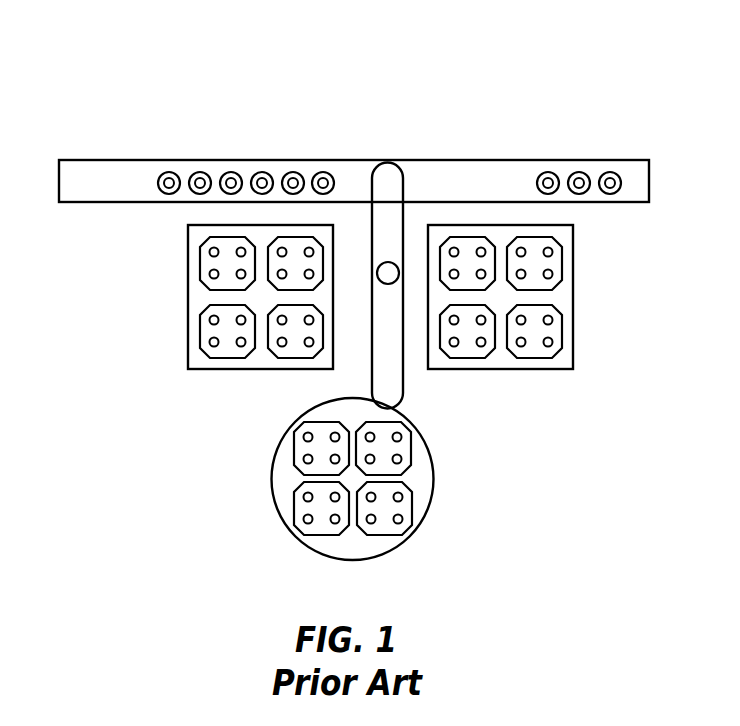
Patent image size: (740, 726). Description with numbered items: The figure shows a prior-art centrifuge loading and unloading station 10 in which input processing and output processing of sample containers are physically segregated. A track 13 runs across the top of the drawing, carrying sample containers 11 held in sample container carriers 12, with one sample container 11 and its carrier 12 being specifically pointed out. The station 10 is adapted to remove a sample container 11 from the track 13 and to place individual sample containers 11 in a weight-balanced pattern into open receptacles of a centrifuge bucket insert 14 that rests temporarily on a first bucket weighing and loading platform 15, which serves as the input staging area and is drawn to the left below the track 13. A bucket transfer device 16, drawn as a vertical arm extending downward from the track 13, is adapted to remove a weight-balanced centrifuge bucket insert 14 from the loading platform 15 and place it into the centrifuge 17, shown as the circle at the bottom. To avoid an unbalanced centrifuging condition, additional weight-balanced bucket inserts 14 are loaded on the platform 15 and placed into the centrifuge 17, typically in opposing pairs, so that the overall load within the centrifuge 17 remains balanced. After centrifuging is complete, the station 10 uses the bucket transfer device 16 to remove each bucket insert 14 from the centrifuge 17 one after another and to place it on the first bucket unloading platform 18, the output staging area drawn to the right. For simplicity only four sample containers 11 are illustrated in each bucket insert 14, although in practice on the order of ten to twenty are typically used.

The centrifuge loading and unloading station 10 is at (440, 95).
The sample container 11 is at (330, 177).
The sample container carrier 12 is at (336, 180).
The track 13 is at (127, 184).
The centrifuge bucket insert 14 is at (200, 260).
The first bucket weighing and loading platform 15 is at (188, 330).
The bucket transfer device 16 is at (420, 382).
The centrifuge 17 is at (446, 486).
The first bucket unloading platform 18 is at (573, 312).